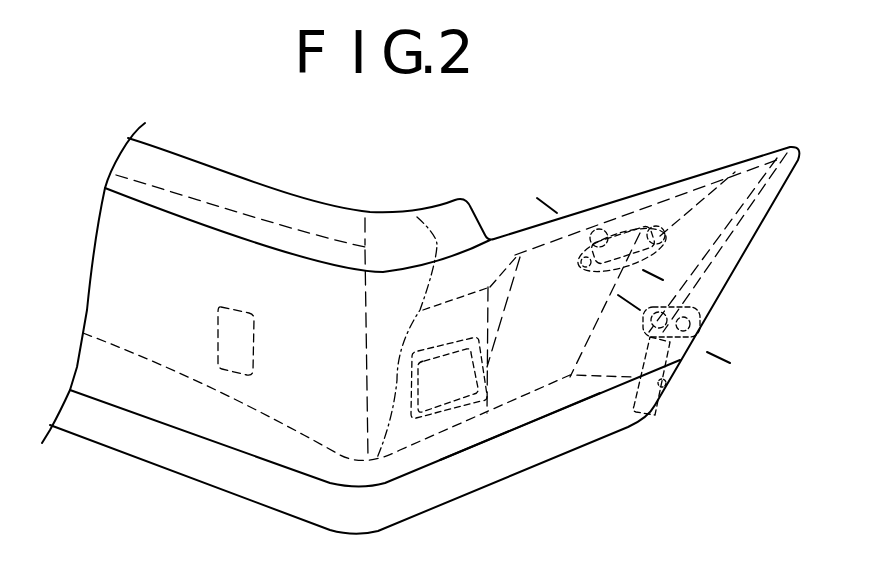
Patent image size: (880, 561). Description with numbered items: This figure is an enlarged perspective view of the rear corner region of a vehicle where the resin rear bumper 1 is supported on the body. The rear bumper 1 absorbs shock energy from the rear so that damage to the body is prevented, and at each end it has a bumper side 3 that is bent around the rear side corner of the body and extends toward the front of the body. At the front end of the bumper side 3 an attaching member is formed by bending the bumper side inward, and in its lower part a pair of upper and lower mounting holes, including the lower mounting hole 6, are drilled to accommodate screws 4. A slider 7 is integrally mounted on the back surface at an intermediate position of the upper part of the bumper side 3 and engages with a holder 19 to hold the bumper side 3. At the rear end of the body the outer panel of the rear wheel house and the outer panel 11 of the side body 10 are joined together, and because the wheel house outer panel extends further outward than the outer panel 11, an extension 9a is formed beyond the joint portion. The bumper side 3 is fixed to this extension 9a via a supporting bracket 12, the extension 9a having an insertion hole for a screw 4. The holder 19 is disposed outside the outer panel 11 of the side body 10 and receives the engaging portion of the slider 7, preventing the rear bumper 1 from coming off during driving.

The rear bumper 1 is at (191, 176).
The bumper side 3 is at (553, 407).
The screws 4 is at (608, 296).
The lower mounting hole 6 is at (528, 200).
The slider 7 is at (638, 233).
The extension 9a is at (740, 222).
The side body 10 is at (538, 280).
The outer panel of the side body 11 is at (688, 195).
The supporting bracket 12 is at (690, 307).
The holder 19 is at (612, 228).